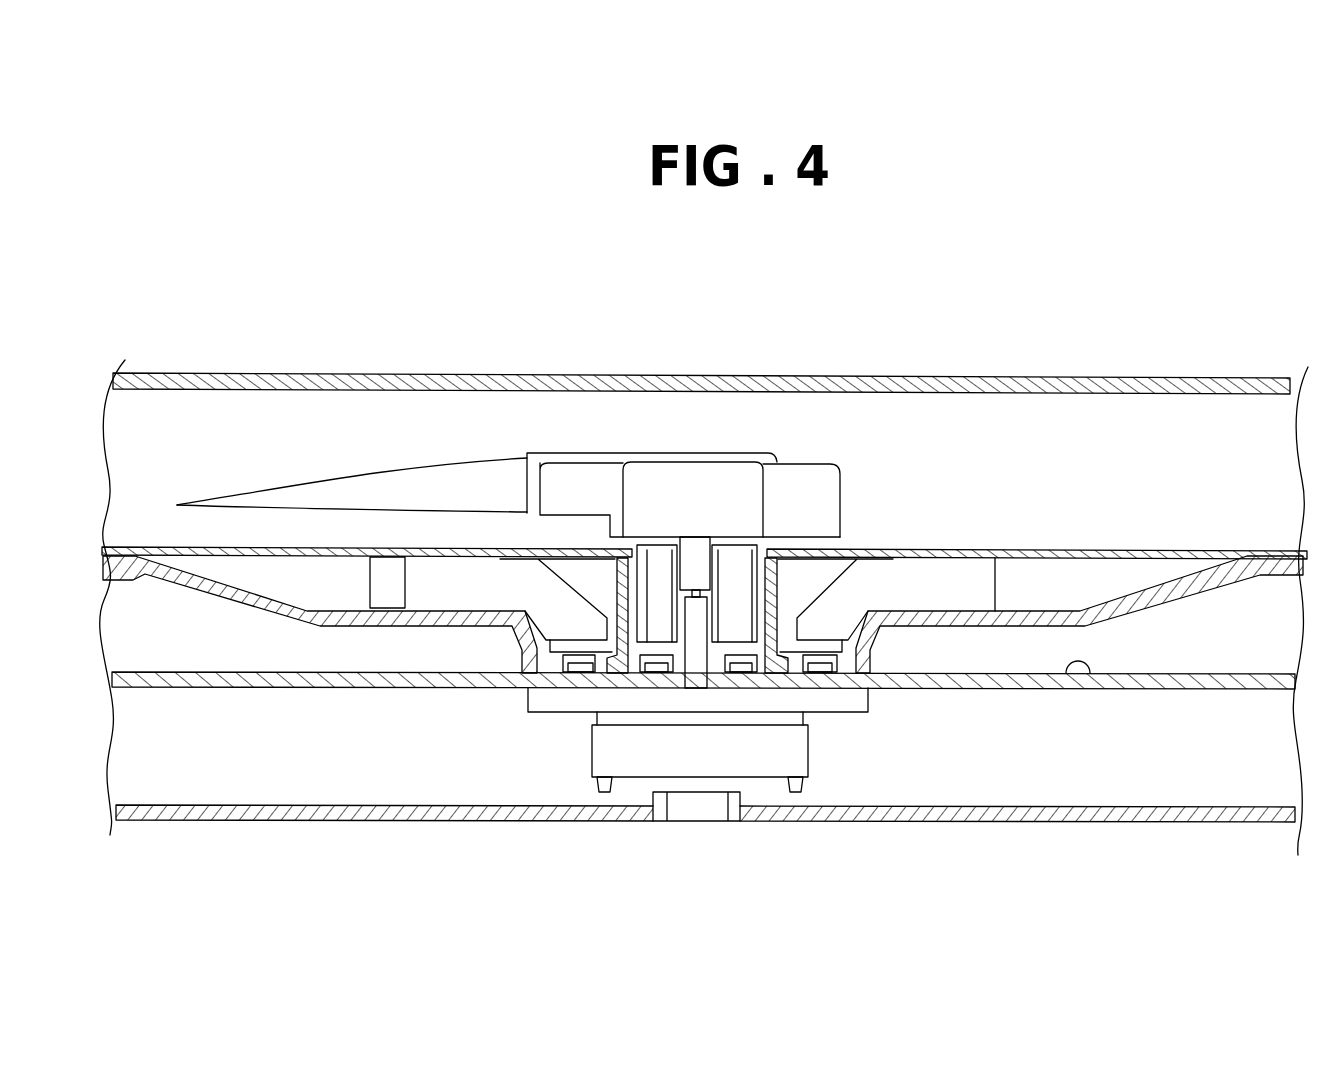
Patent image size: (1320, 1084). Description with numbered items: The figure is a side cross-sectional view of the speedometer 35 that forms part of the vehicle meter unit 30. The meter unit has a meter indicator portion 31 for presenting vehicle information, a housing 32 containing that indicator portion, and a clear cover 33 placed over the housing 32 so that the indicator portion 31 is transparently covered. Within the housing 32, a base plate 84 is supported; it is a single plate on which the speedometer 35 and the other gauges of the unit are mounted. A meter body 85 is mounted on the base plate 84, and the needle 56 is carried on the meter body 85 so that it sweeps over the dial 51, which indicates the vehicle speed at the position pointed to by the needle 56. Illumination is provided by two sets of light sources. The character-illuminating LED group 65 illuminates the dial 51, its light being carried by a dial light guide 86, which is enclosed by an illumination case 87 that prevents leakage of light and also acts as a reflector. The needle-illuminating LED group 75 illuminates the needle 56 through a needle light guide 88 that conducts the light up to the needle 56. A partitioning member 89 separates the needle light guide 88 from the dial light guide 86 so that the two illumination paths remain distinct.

The vehicle meter unit 30 is at (180, 100).
The speedometer 35 is at (237, 278).
The clear cover 33 is at (1068, 376).
The meter indicator portion 31 is at (1157, 498).
The dial 51 is at (1062, 549).
The needle 56 is at (462, 460).
The needle light guide 88 is at (738, 565).
The partitioning member 89 is at (780, 587).
The dial light guide 86 is at (905, 572).
The illumination case 87 is at (370, 607).
The character-illuminating LED group 65 is at (578, 663).
The needle-illuminating LED group 75 is at (652, 663).
The meter body 85 is at (702, 768).
The base plate 84 is at (1085, 660).
The housing 32 is at (1163, 822).